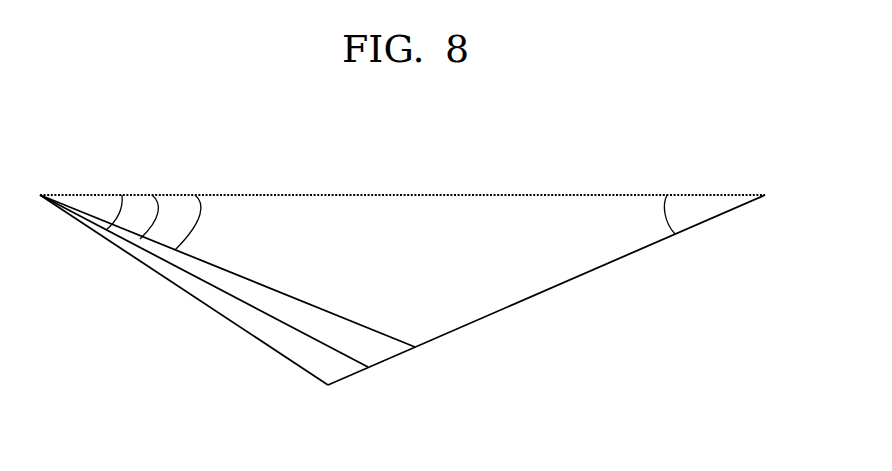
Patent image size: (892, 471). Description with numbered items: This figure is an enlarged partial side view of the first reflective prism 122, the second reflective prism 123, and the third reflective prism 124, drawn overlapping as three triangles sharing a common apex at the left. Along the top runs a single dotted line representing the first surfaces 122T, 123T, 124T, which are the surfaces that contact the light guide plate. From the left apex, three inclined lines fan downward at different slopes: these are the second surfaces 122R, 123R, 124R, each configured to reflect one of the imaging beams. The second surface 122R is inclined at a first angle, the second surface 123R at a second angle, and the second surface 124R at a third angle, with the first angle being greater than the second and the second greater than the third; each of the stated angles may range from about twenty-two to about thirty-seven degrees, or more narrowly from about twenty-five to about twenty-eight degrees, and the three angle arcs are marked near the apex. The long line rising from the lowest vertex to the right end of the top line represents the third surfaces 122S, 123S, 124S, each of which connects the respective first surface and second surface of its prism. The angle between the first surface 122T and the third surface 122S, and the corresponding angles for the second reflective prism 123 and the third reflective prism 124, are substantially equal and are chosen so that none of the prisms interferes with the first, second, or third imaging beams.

The first reflective prism 122 is at (224, 323).
The second reflective prism 123 is at (245, 312).
The third reflective prism 124 is at (268, 303).
The second surface of the first reflective prism 122R is at (288, 358).
The second surface of the second reflective prism 123R is at (252, 307).
The second surface of the third reflective prism 124R is at (230, 271).
The first surface of the first reflective prism 122T is at (402, 155).
The first surface of the second reflective prism 123T is at (402, 155).
The first surface of the third reflective prism 124T is at (403, 194).
The third surface of the first reflective prism 122S is at (546, 290).
The third surface of the second reflective prism 123S is at (546, 290).
The third surface of the third reflective prism 124S is at (632, 253).